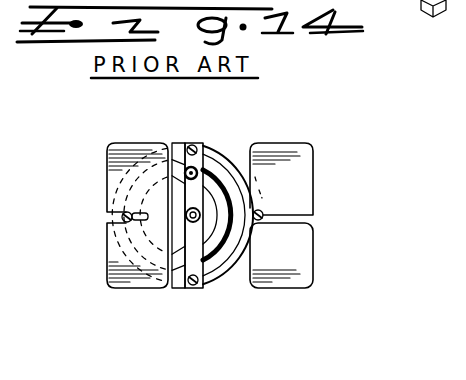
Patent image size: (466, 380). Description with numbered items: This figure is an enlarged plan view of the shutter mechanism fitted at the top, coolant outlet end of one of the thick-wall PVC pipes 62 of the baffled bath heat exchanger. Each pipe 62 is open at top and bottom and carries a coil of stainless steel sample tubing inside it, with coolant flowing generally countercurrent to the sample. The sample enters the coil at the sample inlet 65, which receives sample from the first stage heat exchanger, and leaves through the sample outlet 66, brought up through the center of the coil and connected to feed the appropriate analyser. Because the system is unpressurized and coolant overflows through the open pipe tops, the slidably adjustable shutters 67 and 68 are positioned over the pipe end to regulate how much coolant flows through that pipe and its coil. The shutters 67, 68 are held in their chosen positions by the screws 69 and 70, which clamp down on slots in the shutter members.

The thick-wall PVC pipe 62 is at (228, 283).
The sample inlet 65 is at (195, 172).
The sample outlet 66 is at (197, 231).
The shutter 67 is at (108, 153).
The shutter 68 is at (314, 145).
The screw 69 is at (123, 214).
The screw 70 is at (259, 214).